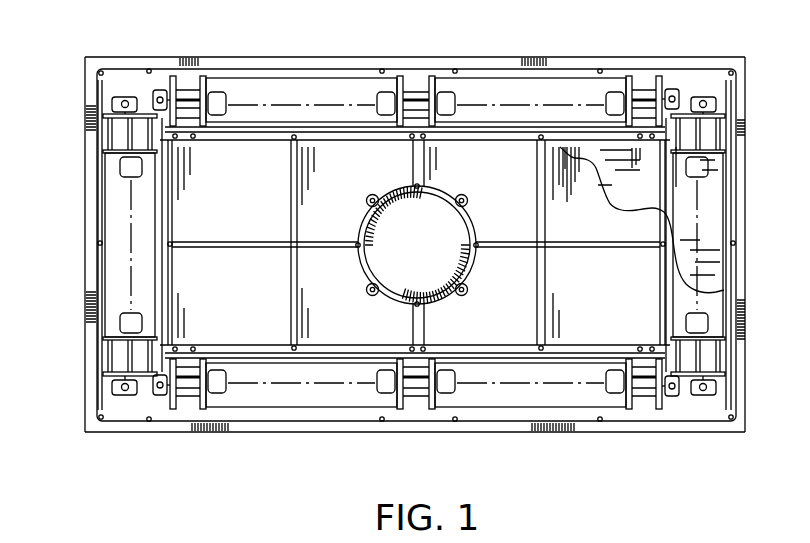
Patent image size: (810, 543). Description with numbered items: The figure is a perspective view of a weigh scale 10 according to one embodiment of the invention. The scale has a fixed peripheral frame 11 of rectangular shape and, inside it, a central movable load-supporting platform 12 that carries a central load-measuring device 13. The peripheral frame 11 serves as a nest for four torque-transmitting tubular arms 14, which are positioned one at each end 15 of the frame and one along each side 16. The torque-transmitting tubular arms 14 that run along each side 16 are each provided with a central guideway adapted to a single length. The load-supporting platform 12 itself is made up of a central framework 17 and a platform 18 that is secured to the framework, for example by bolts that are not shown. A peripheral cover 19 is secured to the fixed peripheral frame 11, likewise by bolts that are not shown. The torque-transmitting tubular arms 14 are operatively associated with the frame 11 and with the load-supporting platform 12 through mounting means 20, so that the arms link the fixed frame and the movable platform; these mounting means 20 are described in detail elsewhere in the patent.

The weigh scale 10 is at (446, 40).
The fixed peripheral frame 11 is at (593, 62).
The load-supporting platform 12 is at (243, 170).
The load-measuring device 13 is at (433, 220).
The torque-transmitting tubular arms 14 is at (290, 95).
The end 15 is at (92, 159).
The side 16 is at (510, 58).
The central framework 17 is at (220, 248).
The platform 18 is at (643, 167).
The peripheral cover 19 is at (718, 226).
The mounting means 20 is at (190, 92).